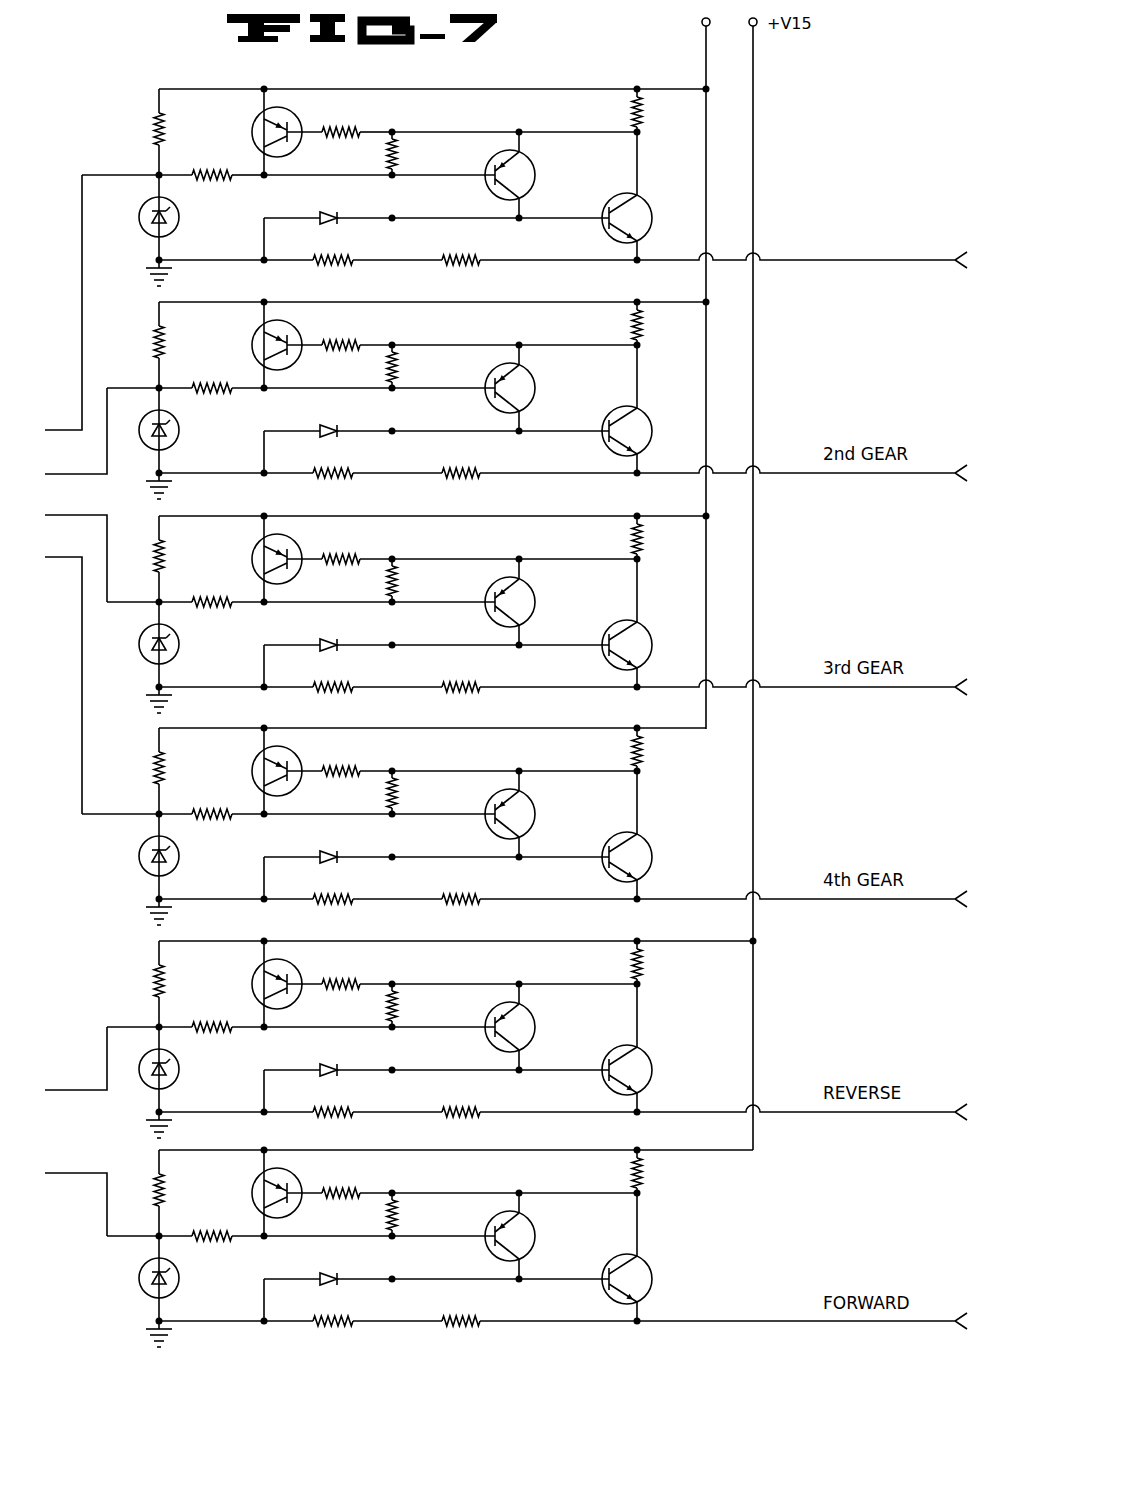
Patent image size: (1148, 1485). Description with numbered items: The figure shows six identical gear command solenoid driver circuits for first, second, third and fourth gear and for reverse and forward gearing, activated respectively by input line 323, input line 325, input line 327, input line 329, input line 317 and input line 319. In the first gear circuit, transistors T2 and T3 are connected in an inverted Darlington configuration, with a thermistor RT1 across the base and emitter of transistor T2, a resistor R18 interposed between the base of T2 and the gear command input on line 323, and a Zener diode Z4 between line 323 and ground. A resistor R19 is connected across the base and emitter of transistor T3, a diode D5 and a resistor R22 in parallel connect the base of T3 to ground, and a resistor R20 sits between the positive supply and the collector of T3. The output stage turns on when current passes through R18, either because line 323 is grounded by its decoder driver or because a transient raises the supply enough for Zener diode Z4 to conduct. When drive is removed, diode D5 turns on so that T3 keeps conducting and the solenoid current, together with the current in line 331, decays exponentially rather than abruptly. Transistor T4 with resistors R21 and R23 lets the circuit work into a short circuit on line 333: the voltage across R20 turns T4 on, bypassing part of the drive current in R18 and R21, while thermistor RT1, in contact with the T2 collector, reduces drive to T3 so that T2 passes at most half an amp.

The resistor R21 is at (126, 132).
The transistor T4 is at (253, 132).
The resistor R18 is at (211, 162).
The resistor R23 is at (339, 116).
The thermistor RT1 is at (418, 153).
The transistor T2 is at (532, 175).
The transistor T3 is at (639, 221).
The resistor R20 is at (613, 110).
The line 331 is at (705, 151).
The diode D5 is at (328, 204).
The Zener diode Z4 is at (179, 217).
The resistor R22 is at (330, 271).
The resistor R19 is at (463, 271).
The line 333 is at (782, 262).
The input line 323 is at (82, 313).
The input line 325 is at (116, 388).
The input line 327 is at (120, 603).
The input line 329 is at (80, 814).
The input line 317 is at (125, 1022).
The input line 319 is at (108, 1233).